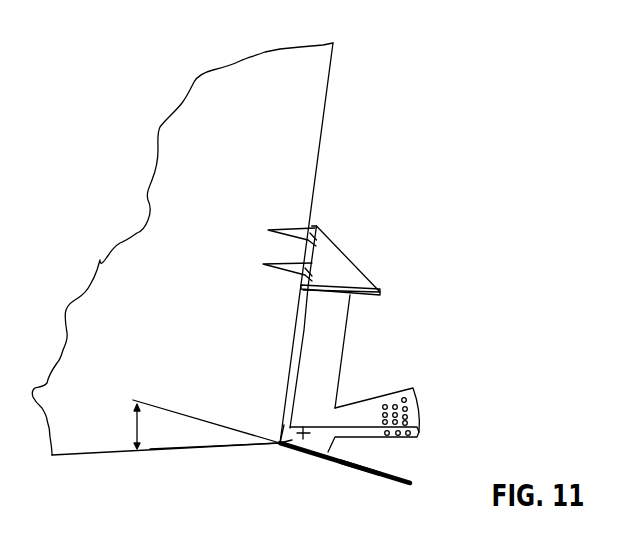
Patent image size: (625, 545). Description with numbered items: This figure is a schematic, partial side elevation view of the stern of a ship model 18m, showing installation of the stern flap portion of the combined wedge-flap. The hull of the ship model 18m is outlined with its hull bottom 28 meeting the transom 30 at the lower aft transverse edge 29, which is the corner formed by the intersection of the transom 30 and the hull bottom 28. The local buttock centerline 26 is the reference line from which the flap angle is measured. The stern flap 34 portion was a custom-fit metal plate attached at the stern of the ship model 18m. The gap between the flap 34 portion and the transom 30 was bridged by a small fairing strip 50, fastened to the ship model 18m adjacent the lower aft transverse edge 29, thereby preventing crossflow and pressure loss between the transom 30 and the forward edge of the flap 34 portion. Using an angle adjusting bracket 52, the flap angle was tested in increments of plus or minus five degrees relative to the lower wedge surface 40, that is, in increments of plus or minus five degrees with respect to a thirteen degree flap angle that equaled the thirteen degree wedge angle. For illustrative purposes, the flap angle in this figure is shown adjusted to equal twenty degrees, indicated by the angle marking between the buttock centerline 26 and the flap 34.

The ship model 18m is at (121, 138).
The buttock centerline 26 is at (210, 452).
The hull bottom 28 is at (112, 458).
The lower aft transverse edge 29 is at (280, 445).
The transom 30 is at (327, 128).
The stern flap 34 is at (387, 483).
The lower wedge surface 40 is at (365, 478).
The fairing strip 50 is at (285, 446).
The angle adjusting bracket 52 is at (380, 392).